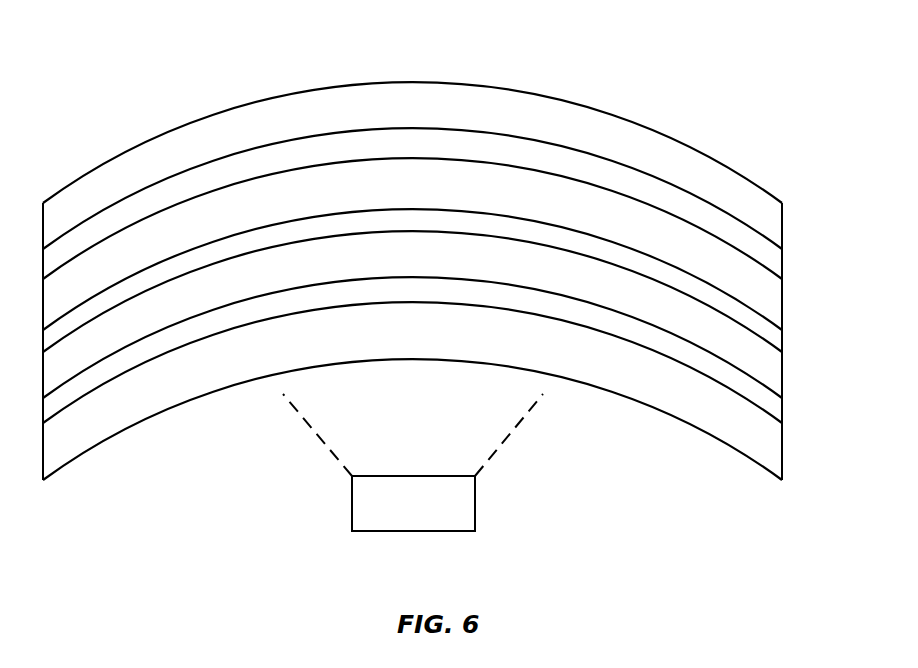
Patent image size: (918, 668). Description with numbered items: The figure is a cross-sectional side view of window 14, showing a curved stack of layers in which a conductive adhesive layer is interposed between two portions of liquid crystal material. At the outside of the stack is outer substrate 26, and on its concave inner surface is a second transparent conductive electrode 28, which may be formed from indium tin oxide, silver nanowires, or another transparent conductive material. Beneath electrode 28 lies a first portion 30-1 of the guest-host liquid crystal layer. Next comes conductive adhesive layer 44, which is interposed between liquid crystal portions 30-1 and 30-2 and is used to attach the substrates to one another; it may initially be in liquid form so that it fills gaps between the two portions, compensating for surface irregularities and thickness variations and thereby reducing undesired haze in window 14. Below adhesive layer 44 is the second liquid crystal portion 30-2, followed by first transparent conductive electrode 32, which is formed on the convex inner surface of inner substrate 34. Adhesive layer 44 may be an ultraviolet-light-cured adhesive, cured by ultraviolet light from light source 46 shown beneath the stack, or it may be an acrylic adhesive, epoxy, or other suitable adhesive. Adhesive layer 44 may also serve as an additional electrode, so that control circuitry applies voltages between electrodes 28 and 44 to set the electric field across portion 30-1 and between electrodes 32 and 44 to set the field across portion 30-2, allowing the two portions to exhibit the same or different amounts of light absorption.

The window 14 is at (451, 253).
The outer substrate 26 is at (770, 221).
The second transparent conductive electrode 28 is at (770, 262).
The first portion of liquid crystal layer 30-1 is at (773, 303).
The conductive adhesive layer 44 is at (772, 337).
The second portion of liquid crystal layer 30-2 is at (772, 370).
The first transparent conductive electrode 32 is at (772, 408).
The inner substrate 34 is at (771, 441).
The light source 46 is at (412, 513).